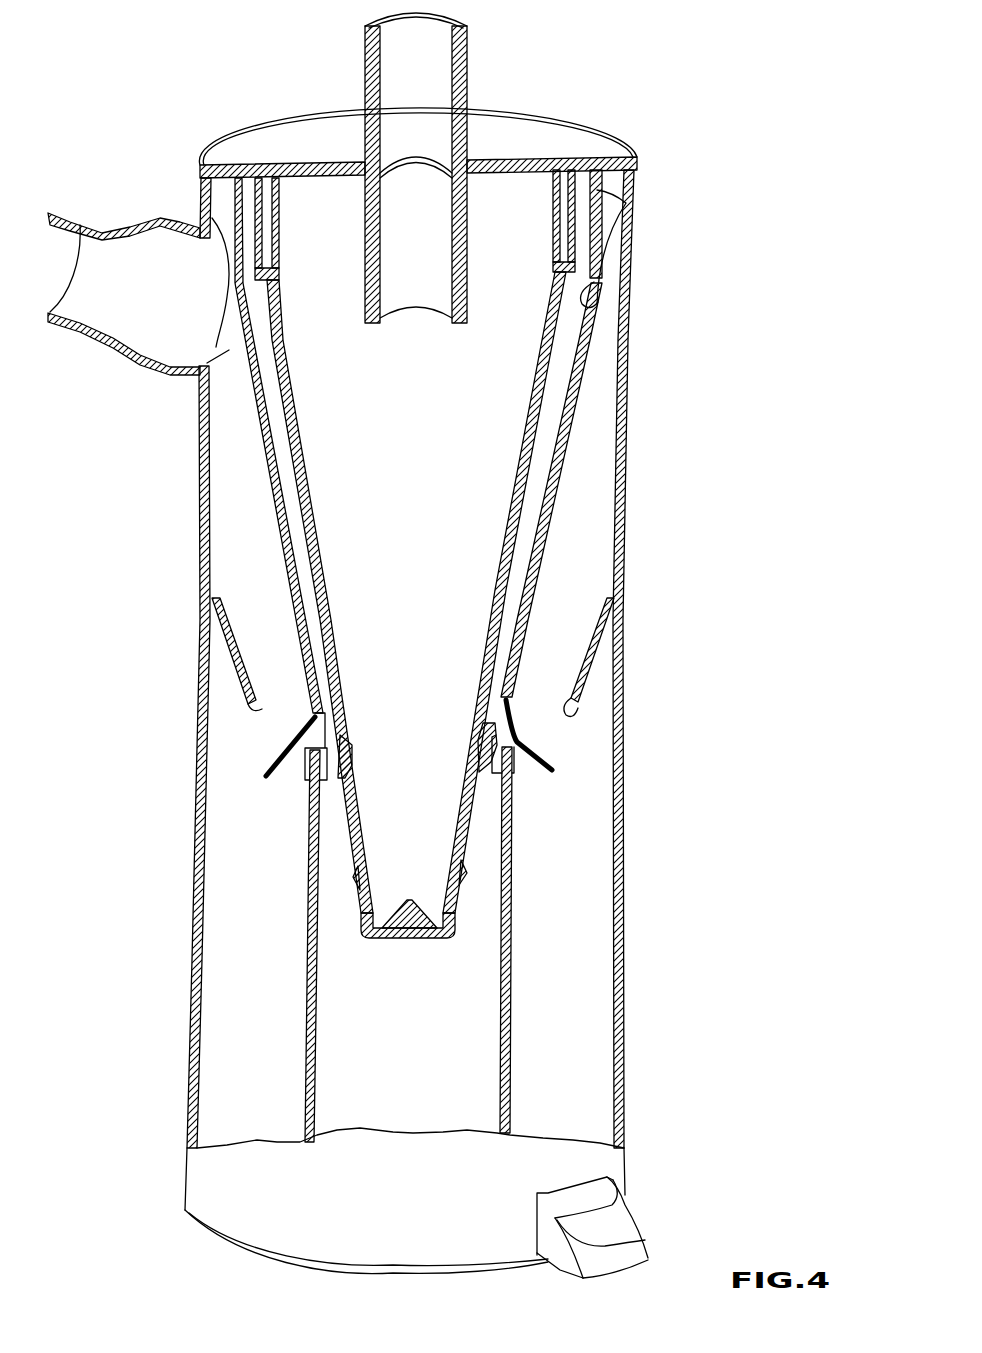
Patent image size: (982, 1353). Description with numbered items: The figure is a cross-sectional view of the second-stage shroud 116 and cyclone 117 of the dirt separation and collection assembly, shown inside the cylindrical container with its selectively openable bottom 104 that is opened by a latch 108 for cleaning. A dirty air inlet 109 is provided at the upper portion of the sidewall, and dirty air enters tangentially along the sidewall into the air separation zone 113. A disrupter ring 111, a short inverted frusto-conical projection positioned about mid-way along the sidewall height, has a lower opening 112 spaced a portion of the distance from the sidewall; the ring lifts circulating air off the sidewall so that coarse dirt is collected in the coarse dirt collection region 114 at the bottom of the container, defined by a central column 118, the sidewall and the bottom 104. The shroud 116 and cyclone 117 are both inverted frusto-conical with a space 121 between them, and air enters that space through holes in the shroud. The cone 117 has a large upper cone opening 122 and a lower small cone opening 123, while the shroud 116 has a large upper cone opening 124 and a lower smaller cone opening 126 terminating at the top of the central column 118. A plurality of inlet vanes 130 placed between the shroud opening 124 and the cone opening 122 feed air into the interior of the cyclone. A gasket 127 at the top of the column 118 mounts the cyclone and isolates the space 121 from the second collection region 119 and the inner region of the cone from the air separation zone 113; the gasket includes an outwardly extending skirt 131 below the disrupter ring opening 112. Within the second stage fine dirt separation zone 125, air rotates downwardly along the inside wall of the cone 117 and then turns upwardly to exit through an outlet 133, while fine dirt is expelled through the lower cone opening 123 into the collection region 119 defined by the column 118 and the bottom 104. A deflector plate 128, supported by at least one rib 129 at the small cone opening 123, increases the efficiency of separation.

The selectively openable bottom 104 is at (248, 1250).
The latch 108 is at (638, 1243).
The dirty air inlet 109 is at (80, 225).
The disrupter ring 111 is at (242, 689).
The lower opening 112 is at (576, 716).
The air separation zone 113 is at (250, 495).
The coarse dirt collection region 114 is at (227, 1133).
The frusto-conical shroud 116 is at (550, 517).
The cyclone 117 is at (537, 428).
The central column 118 is at (510, 925).
The second collection region 119 is at (460, 1113).
The space 121 is at (540, 465).
The large upper cone opening 122 is at (542, 251).
The lower small cone opening 123 is at (397, 890).
The large upper cone opening of shroud 124 is at (580, 298).
The second stage fine dirt separation zone 125 is at (250, 568).
The lower smaller cone opening of shroud 126 is at (316, 716).
The gasket 127 is at (553, 762).
The deflector plate 128 is at (433, 940).
The rib 129 is at (472, 887).
The inlet vanes 130 is at (548, 158).
The skirt 131 is at (517, 780).
The outlet 133 is at (416, 300).